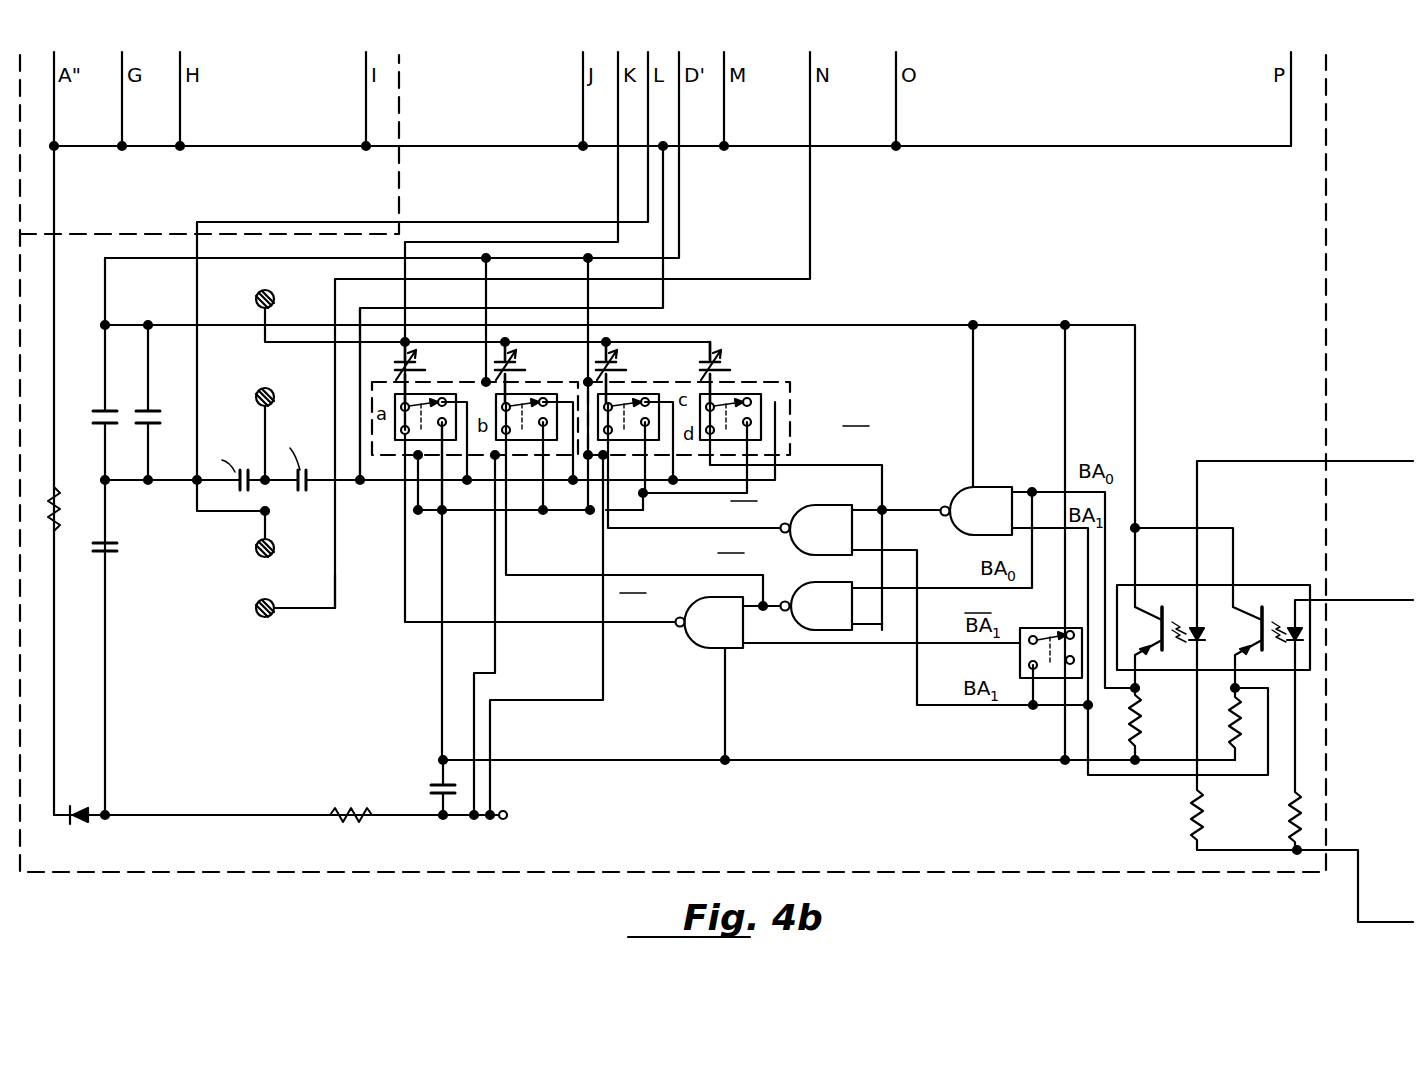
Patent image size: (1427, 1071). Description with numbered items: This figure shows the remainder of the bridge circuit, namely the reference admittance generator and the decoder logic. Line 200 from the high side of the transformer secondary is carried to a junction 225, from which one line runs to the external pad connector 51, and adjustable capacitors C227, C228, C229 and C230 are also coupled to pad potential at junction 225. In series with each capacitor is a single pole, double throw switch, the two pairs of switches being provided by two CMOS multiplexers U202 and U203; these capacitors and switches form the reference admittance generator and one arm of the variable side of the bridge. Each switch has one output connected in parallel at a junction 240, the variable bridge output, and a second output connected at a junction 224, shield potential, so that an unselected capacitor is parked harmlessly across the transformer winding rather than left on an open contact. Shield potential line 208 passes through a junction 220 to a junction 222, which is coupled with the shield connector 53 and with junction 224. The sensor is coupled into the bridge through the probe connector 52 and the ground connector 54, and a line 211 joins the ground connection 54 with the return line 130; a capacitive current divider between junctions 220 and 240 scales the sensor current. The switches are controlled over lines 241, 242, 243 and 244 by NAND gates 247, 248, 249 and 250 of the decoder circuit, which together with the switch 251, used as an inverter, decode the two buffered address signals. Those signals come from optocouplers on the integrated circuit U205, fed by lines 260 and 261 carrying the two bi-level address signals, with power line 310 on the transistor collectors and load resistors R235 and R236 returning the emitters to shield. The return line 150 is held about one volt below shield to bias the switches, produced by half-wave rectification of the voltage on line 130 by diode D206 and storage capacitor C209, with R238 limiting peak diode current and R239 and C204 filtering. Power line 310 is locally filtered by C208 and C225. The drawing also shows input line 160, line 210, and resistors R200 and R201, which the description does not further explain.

The return line 130 is at (88, 150).
The input line A" 160 is at (56, 118).
The shield potential line 208 is at (290, 222).
The line from the high side of the secondary winding 200 is at (614, 185).
The power line 310 is at (679, 222).
The connection line from N 210 is at (810, 232).
The external connector marked PAD 51 is at (254, 297).
The external connector marked PR. 52 is at (258, 393).
The external connector marked SHD. 53 is at (258, 554).
The sensor ground connection 54 is at (256, 610).
The junction 220 is at (195, 485).
The junction 222 is at (260, 516).
The junction 240 is at (360, 486).
The line 211 is at (337, 578).
The junction 224 is at (445, 515).
The junction 225 is at (594, 343).
The switch control line 241 is at (560, 622).
The switch control line 242 is at (620, 575).
The switch control line 243 is at (655, 530).
The switch control line 244 is at (884, 467).
The NAND gate 247 is at (703, 636).
The NAND gate 248 is at (816, 606).
The NAND gate 249 is at (822, 520).
The NAND gate 250 is at (985, 497).
The single pole, double throw switch 251 is at (1018, 655).
The line 260 is at (1283, 461).
The line 261 is at (1358, 600).
The return line 150 is at (405, 818).
The capacitor C208 is at (100, 411).
The capacitor C225 is at (152, 411).
The storage capacitor C209 is at (117, 545).
The resistor R238 is at (56, 495).
The diode D206 is at (82, 822).
The resistor R239 is at (340, 808).
The capacitor C204 is at (437, 783).
The adjustable capacitor C227 is at (424, 366).
The adjustable capacitor C228 is at (524, 366).
The adjustable capacitor C229 is at (625, 366).
The adjustable capacitor C230 is at (729, 366).
The CMOS two-input multiplexer U203 is at (372, 385).
The CMOS two-input multiplexer U202 is at (790, 400).
The integrated circuit U205 is at (1255, 587).
The load resistor R235 is at (1160, 700).
The load resistor R236 is at (1240, 738).
The resistor R200 is at (1193, 822).
The resistor R201 is at (1300, 822).